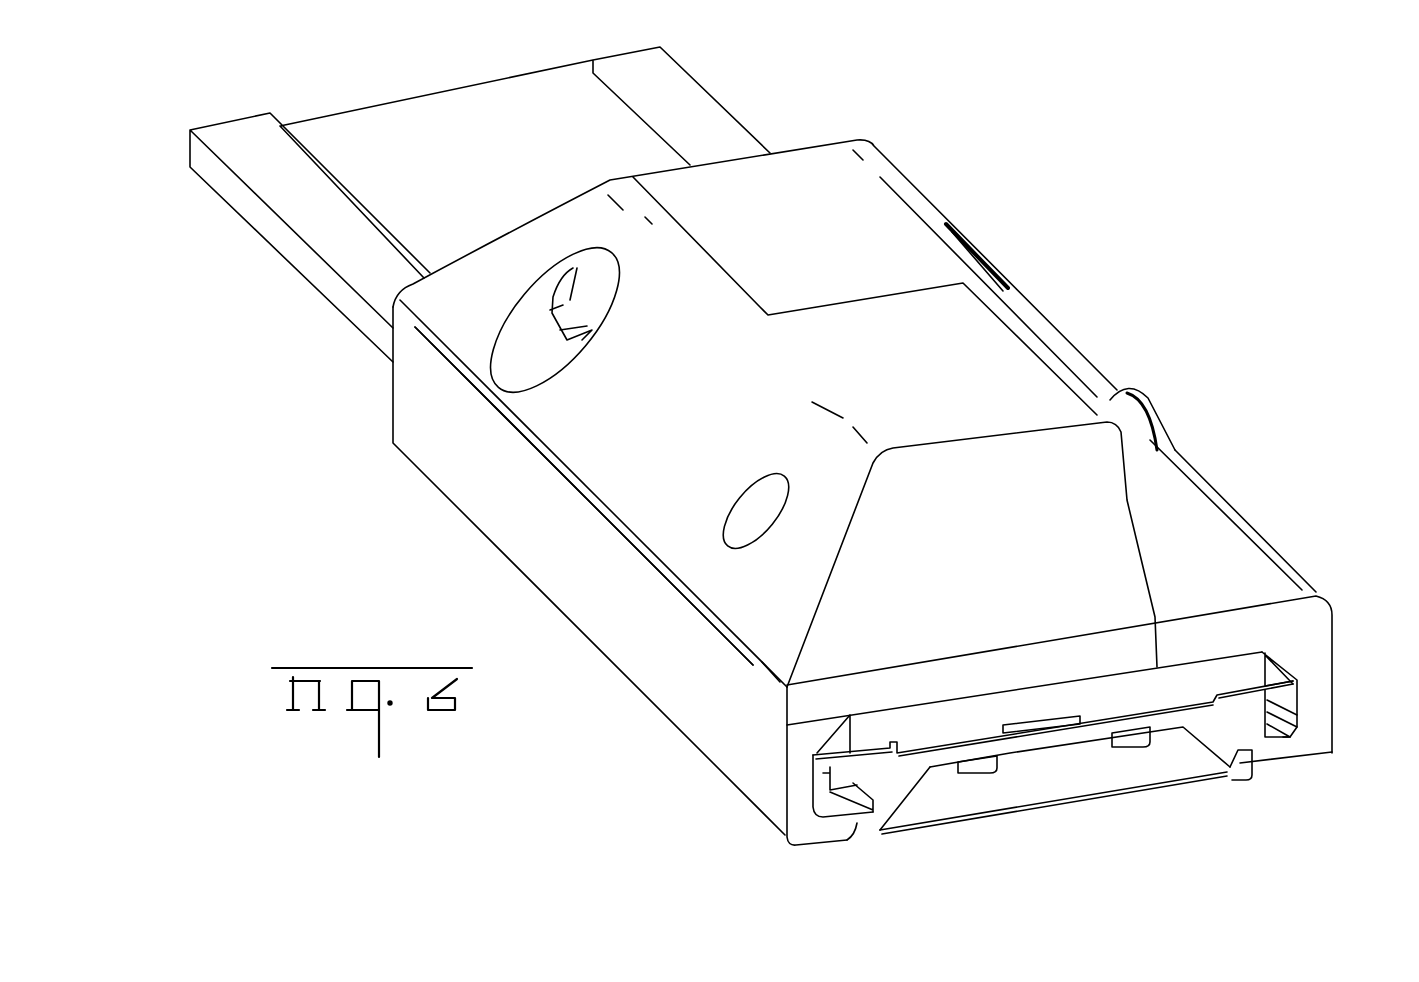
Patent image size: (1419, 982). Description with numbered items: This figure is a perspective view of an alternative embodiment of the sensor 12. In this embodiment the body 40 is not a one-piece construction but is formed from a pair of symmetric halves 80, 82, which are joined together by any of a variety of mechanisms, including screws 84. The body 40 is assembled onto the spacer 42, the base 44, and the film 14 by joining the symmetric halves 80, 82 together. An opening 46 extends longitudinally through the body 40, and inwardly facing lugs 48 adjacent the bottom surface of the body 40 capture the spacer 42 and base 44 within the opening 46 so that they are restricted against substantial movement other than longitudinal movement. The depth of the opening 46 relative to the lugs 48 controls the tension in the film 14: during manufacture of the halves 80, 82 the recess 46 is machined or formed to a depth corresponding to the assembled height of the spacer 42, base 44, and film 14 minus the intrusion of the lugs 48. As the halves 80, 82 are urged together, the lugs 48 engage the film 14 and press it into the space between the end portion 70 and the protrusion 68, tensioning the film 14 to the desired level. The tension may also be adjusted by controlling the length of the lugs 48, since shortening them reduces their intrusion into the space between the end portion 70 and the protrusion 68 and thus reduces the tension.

The sensor 12 is at (973, 172).
The film 14 is at (1267, 742).
The body 40 is at (1020, 337).
The spacer 42 is at (1247, 668).
The base 44 is at (1280, 698).
The opening 46 is at (817, 753).
The lugs 48 is at (857, 823).
The protrusion 68 is at (890, 798).
The end portion 70 is at (827, 773).
The symmetric half 80 is at (840, 163).
The symmetric half 82 is at (519, 505).
The screws 84 is at (583, 297).